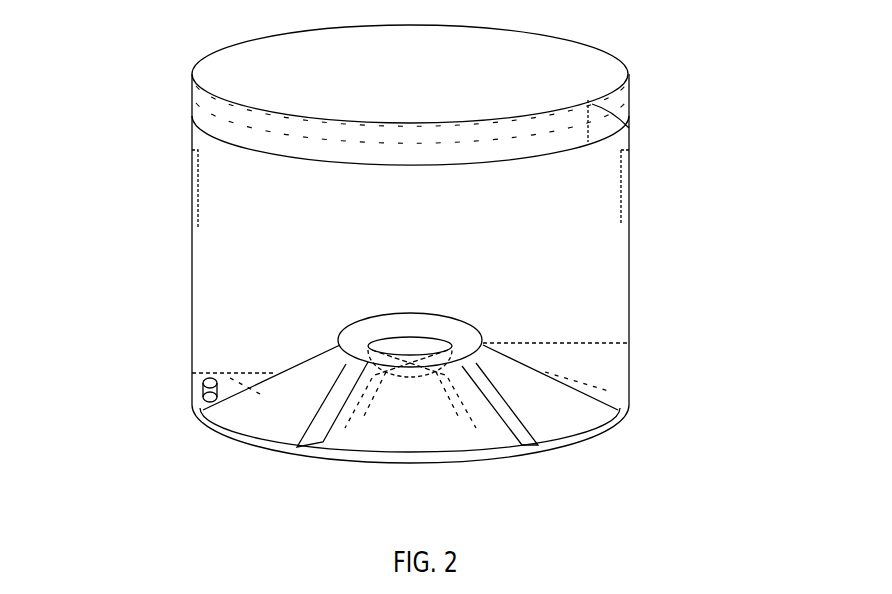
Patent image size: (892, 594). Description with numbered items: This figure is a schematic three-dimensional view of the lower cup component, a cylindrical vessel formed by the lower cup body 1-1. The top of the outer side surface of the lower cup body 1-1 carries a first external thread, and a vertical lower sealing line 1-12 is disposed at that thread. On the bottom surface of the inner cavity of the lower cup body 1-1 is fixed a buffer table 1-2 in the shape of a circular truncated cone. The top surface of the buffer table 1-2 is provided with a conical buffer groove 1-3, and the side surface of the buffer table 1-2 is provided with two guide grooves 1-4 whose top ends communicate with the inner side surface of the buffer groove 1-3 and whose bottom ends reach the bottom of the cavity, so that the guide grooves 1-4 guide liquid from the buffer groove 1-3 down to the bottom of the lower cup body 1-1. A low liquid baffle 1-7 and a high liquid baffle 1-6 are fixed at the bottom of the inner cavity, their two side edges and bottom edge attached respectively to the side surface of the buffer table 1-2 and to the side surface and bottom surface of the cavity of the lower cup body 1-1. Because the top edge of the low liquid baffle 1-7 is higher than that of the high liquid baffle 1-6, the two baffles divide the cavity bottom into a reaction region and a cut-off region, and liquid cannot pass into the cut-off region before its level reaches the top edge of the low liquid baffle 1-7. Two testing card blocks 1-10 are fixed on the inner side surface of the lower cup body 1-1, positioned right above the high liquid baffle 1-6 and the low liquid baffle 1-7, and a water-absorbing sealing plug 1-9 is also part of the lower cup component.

The lower cup body 1-1 is at (192, 263).
The buffer table 1-2 is at (558, 410).
The buffer groove 1-3 is at (415, 338).
The guide grooves 1-4 is at (300, 447).
The high liquid baffle 1-6 is at (610, 375).
The low liquid baffle 1-7 is at (232, 380).
The water-absorbing sealing plug 1-9 is at (203, 397).
The testing card blocks 1-10 is at (192, 175).
The lower sealing line 1-12 is at (590, 130).